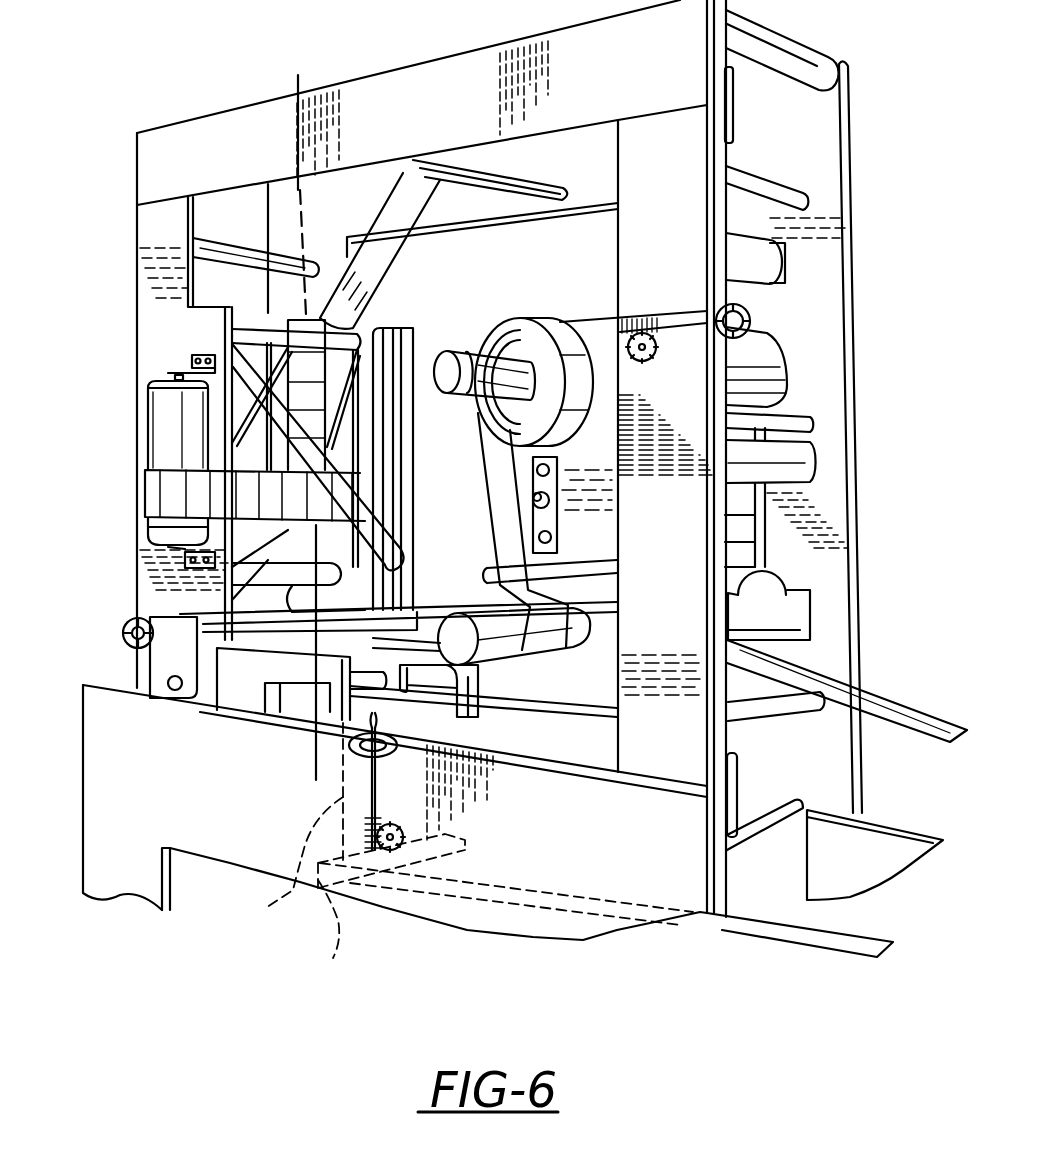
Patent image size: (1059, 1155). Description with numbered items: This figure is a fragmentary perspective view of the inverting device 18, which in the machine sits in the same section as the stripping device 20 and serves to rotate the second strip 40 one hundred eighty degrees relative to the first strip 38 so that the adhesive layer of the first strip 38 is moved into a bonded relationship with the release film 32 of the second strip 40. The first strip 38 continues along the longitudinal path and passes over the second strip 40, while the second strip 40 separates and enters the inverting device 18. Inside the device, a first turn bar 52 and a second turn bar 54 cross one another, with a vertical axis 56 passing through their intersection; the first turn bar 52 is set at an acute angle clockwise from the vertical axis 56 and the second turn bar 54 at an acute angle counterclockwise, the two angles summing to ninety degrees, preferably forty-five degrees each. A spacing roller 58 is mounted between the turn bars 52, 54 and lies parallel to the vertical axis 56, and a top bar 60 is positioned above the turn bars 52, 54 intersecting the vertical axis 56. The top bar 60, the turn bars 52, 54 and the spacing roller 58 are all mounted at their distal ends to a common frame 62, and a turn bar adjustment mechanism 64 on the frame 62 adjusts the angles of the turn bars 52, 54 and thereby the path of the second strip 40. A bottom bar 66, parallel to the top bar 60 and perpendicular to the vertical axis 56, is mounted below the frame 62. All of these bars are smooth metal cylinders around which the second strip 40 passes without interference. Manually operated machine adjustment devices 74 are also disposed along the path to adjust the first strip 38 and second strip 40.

The inverting device 18 is at (122, 215).
The stripping device 20 is at (575, 262).
The release film 32 is at (517, 320).
The first strip 38 is at (402, 213).
The second strip 40 is at (160, 495).
The first turn bar 52 is at (415, 365).
The second turn bar 54 is at (402, 548).
The vertical axis 56 is at (300, 90).
The spacing roller 58 is at (160, 413).
The top bar 60 is at (257, 307).
The frame 62 is at (410, 430).
The turn bar adjustment mechanism 64 is at (128, 668).
The bottom bar 66 is at (321, 931).
The machine adjustment devices 74 is at (665, 322).